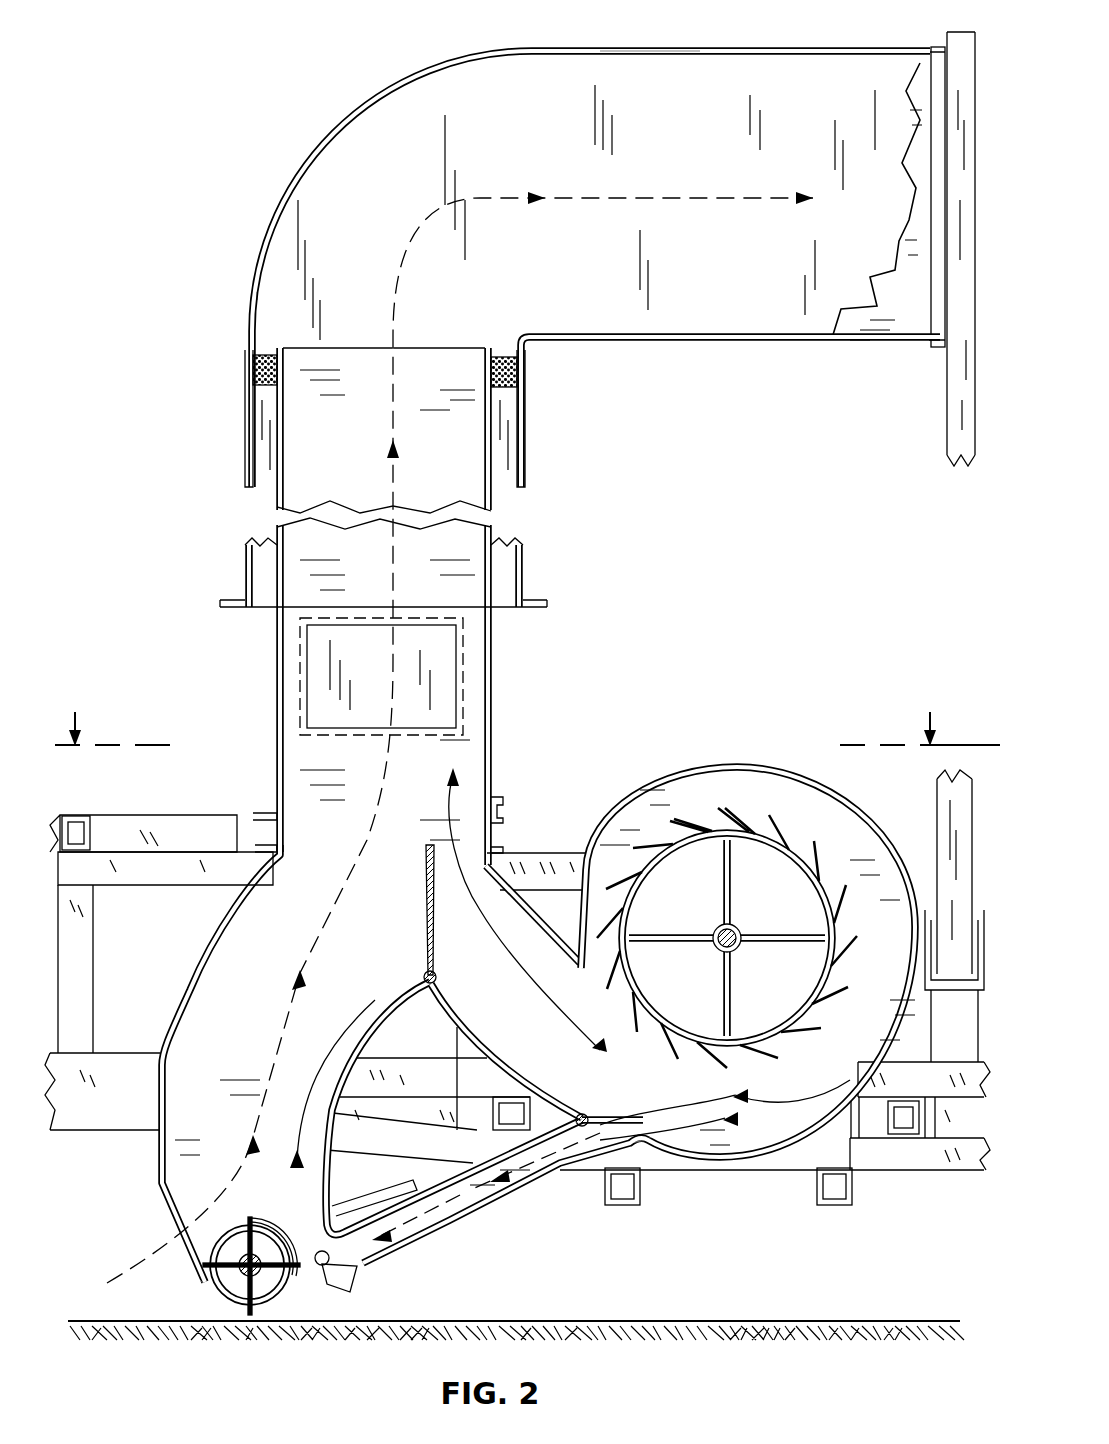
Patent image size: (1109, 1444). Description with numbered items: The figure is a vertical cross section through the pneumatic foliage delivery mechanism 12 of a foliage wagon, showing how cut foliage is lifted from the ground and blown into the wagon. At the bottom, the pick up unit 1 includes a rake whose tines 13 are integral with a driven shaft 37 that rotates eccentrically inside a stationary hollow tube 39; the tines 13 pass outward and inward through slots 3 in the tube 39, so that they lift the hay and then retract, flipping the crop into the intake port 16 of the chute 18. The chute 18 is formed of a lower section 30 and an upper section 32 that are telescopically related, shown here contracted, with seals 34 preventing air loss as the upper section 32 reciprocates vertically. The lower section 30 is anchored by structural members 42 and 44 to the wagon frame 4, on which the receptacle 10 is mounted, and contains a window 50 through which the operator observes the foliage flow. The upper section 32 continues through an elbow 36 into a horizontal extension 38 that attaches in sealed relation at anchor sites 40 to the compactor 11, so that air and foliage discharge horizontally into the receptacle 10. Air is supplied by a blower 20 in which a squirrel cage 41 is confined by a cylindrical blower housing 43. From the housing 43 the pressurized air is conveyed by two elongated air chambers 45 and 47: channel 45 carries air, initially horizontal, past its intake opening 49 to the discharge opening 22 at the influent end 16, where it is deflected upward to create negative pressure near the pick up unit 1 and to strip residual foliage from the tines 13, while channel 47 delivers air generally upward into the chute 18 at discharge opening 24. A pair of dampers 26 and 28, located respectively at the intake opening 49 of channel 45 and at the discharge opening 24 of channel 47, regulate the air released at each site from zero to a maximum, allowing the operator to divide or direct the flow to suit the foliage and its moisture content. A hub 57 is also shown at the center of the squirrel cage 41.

The pick up unit 1 is at (238, 1287).
The slots 3 is at (255, 1180).
The frame 4 is at (105, 822).
The receptacle 10 is at (940, 802).
The compactor 11 is at (945, 400).
The pneumatic foliage delivery mechanism 12 is at (568, 564).
The tines 13 is at (202, 1278).
The intake port 16 is at (175, 1225).
The chute 18 is at (264, 210).
The blowers 20 is at (743, 782).
The discharge opening 22 is at (333, 1290).
The discharge opening 24 is at (505, 838).
The damper 26 is at (615, 1115).
The damper 28 is at (425, 910).
The lower section 30 is at (283, 772).
The upper section 32 is at (245, 478).
The seals 34 is at (253, 372).
The elbow 36 is at (358, 118).
The driven shaft 37 is at (258, 1260).
The horizontal extension 38 is at (678, 57).
The tube 39 is at (272, 1222).
The anchor sites 40 is at (935, 50).
The squirrel cage 41 is at (735, 830).
The structural member 42 is at (505, 815).
The blower housing 43 is at (700, 772).
The structural member 44 is at (495, 795).
The air chamber 45 is at (475, 1185).
The air chamber 47 is at (525, 920).
The intake opening 49 is at (660, 1145).
The window 50 is at (440, 690).
The hub 57 is at (740, 928).